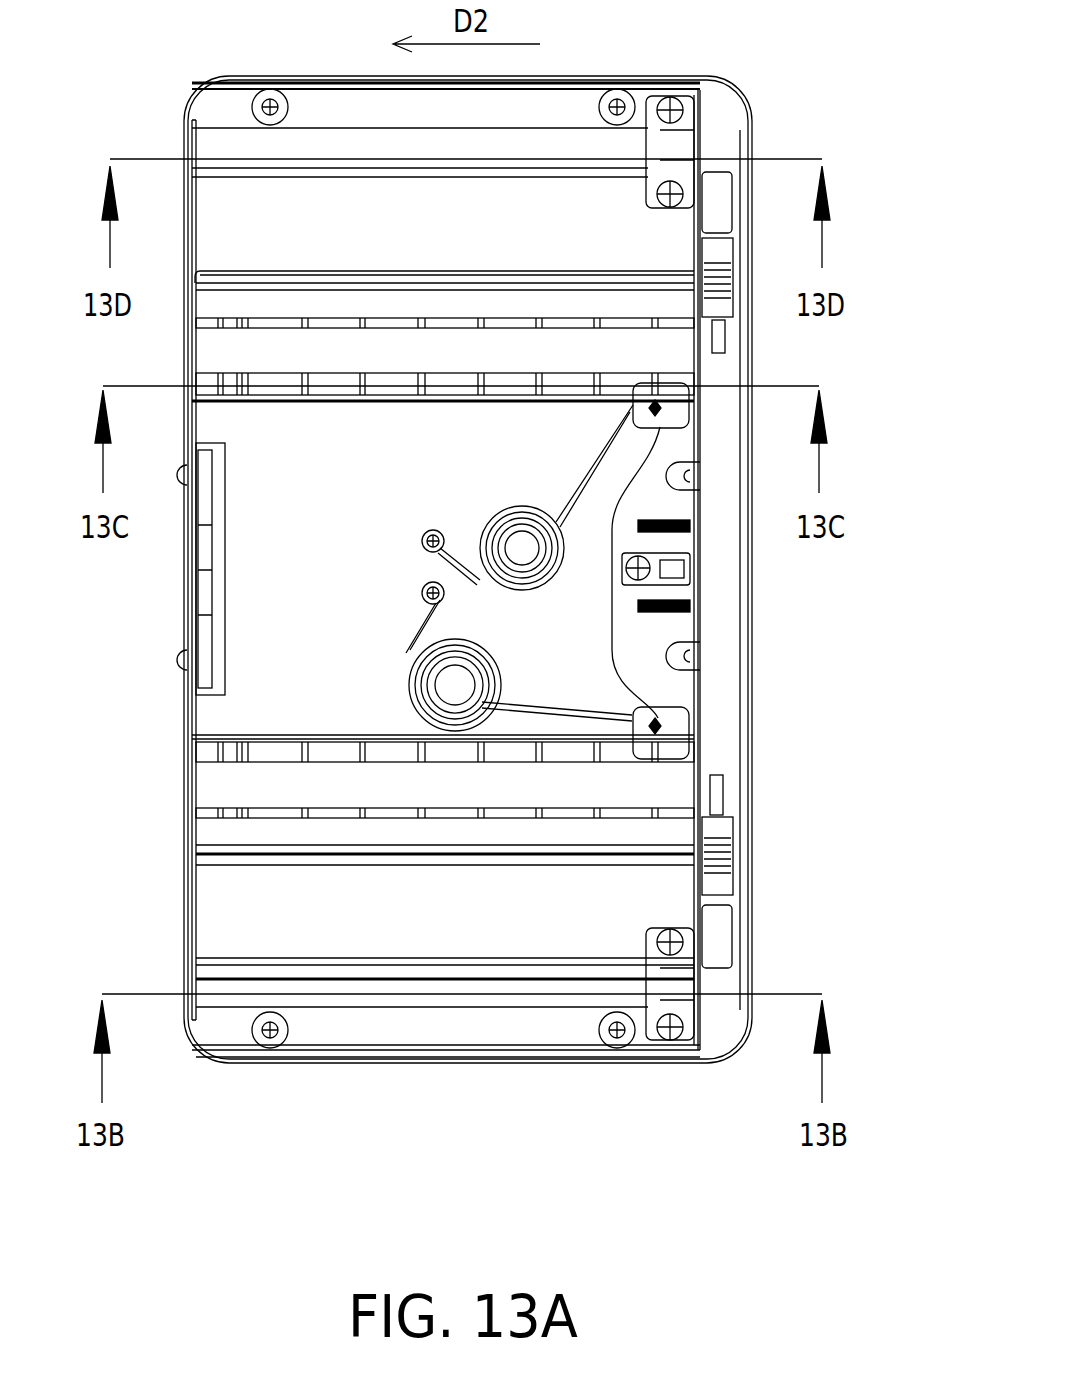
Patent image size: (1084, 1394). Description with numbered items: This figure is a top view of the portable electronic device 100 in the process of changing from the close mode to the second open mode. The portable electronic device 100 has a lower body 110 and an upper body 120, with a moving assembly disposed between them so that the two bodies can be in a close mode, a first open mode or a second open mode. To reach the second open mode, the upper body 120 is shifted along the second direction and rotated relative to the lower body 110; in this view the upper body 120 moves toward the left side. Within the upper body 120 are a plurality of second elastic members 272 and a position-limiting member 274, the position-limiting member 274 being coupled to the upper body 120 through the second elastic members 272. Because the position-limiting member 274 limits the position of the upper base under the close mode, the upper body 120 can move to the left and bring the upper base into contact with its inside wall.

The portable electronic device 100 is at (560, 569).
The lower body 110 is at (458, 570).
The upper body 120 is at (748, 737).
The second elastic members 272 is at (742, 590).
The position-limiting member 274 is at (740, 672).